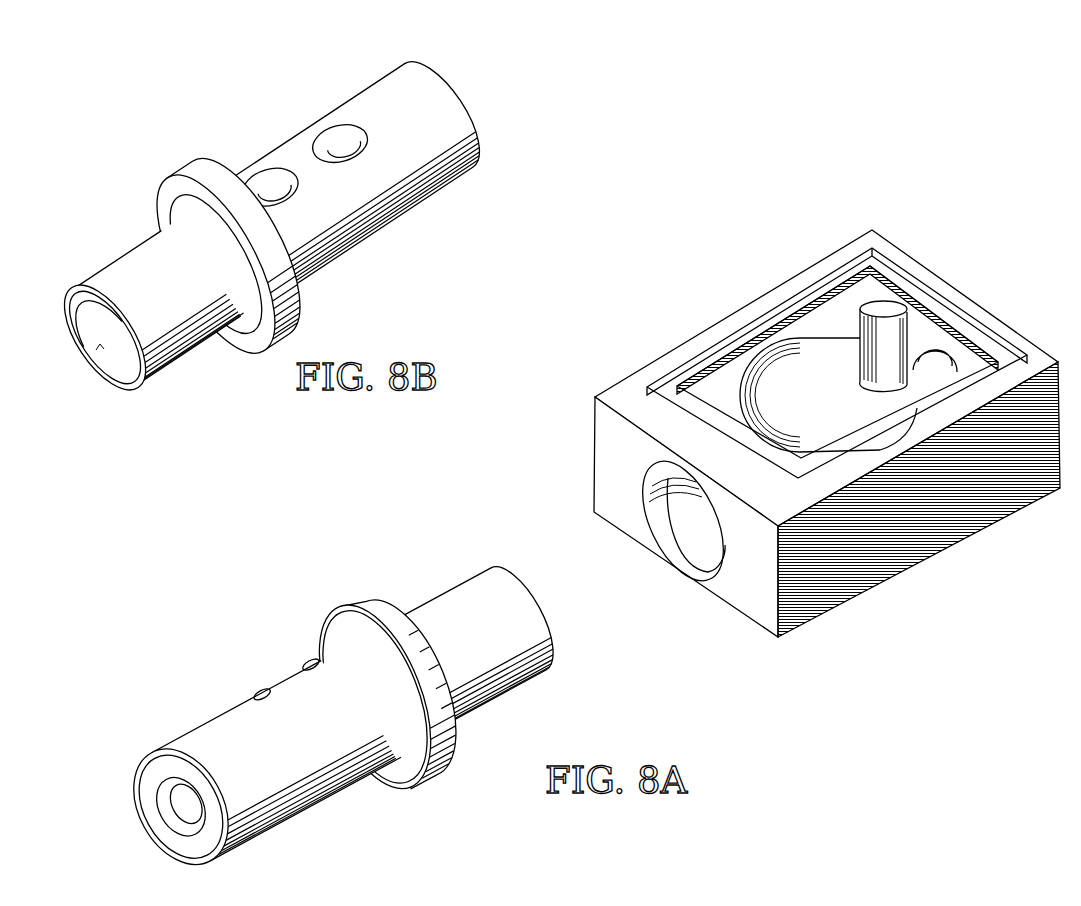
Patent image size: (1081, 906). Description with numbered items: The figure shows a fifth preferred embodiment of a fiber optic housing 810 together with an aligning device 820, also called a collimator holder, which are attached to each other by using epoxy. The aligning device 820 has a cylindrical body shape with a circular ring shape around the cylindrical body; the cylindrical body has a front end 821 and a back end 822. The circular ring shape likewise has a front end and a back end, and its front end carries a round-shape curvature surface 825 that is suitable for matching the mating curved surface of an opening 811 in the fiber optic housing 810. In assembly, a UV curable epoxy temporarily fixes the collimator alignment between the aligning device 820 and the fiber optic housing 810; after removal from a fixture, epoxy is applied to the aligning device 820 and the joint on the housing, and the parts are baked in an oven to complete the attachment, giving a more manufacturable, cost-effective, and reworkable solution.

In FIG. 8A, the fiber optic housing 810 is at (827, 433).
In FIG. 8A, the opening 811 is at (680, 515).
In FIG. 8B, the aligning device 820 is at (286, 247).
In FIG. 8A, the aligning device 820 is at (339, 692).
In FIG. 8B, the front end 821 is at (150, 387).
In FIG. 8A, the front end 821 is at (477, 567).
In FIG. 8B, the back end 822 is at (472, 186).
In FIG. 8A, the back end 822 is at (205, 713).
In FIG. 8B, the round-shape curvature surface 825 is at (170, 208).